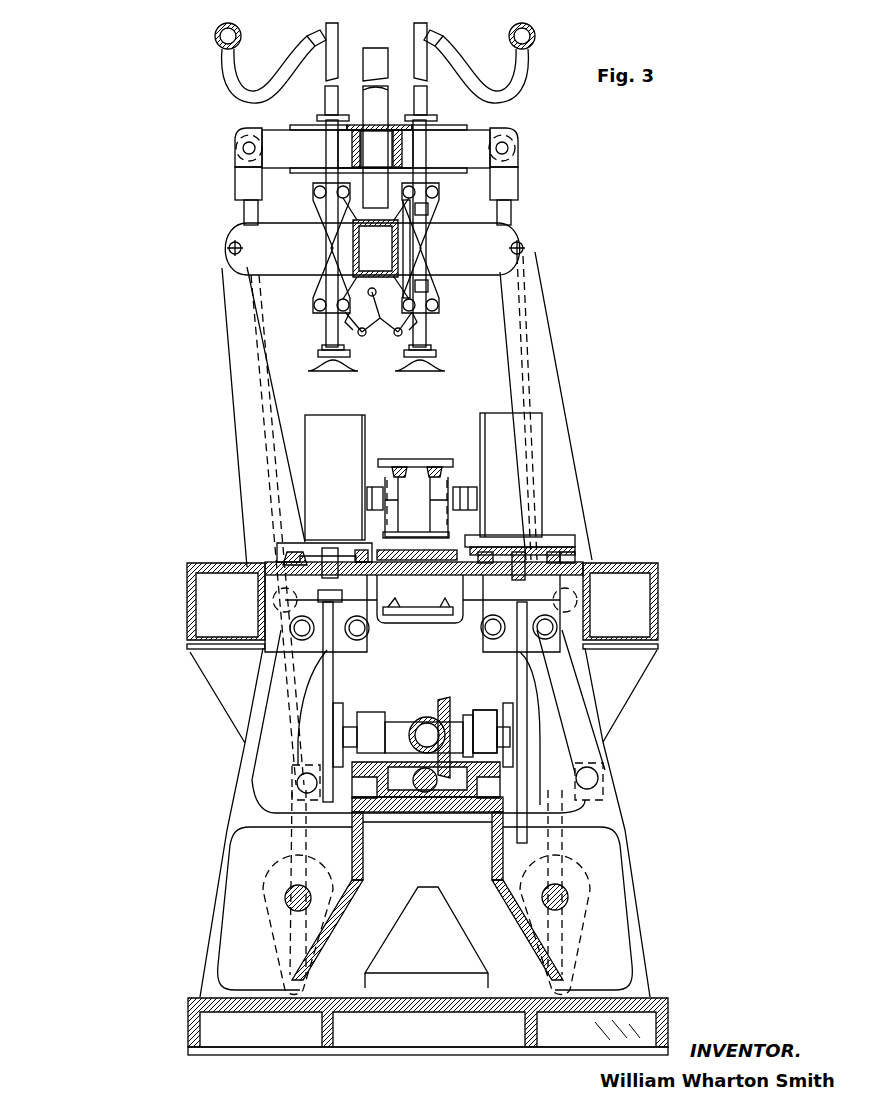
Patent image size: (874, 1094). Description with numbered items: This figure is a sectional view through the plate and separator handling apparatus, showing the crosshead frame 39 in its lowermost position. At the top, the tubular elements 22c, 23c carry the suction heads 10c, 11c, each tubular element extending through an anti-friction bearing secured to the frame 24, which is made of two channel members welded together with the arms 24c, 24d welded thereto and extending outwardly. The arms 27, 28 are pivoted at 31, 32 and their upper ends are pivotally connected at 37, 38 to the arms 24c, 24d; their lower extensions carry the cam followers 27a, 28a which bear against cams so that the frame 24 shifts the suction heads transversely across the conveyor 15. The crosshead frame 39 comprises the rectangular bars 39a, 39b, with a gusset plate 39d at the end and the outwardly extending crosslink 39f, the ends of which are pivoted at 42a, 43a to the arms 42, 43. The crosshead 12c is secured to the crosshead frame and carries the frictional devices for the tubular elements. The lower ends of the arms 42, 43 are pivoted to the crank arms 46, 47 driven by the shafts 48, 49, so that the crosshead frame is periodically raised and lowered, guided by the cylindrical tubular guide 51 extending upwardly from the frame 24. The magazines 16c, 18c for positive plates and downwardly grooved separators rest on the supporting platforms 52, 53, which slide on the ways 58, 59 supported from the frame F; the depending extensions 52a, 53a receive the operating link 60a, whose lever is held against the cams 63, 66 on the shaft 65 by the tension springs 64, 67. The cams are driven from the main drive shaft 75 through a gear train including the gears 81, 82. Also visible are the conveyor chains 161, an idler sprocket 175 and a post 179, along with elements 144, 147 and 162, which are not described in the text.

The hook 144 is at (214, 41).
The hook 147 is at (537, 35).
The tubular element 22c is at (327, 106).
The tubular element 23c is at (428, 104).
The cylindrical tubular guide 51 is at (377, 52).
The main crosshead frame 39 is at (358, 137).
The rectangular bar 39a is at (404, 158).
The rectangular bar 39b is at (350, 158).
The gusset plate 39d is at (292, 127).
The crosslink 39f is at (468, 136).
The crosshead 12c is at (344, 137).
The pivot 43a is at (246, 150).
The pivot 42a is at (508, 149).
The arm 43 is at (246, 206).
The arm 42 is at (514, 206).
The pivotal connection 38 is at (230, 249).
The pivotal connection 37 is at (523, 248).
The arm 28 is at (232, 400).
The arm 27 is at (560, 401).
The frame 24 is at (376, 248).
The arm 24c is at (475, 272).
The arm 24d is at (283, 274).
The suction head 11c is at (335, 371).
The suction head 10c is at (424, 371).
The magazine 16c is at (352, 420).
The magazine 18c is at (498, 418).
The conveyor 15 is at (398, 482).
The plate 162 is at (422, 460).
The conveyor chain 161 is at (384, 470).
The post 179 is at (404, 488).
The idler sprocket 175 is at (415, 503).
The supporting platform 53 is at (282, 530).
The extension 53a is at (330, 550).
The supporting platform 52 is at (546, 537).
The extension 52a is at (516, 556).
The way 58 is at (285, 557).
The way 59 is at (566, 557).
The pivot 32 is at (272, 600).
The pivot 31 is at (578, 600).
The operating link 60a is at (352, 601).
The tension spring 67 is at (290, 630).
The tension spring 64 is at (558, 630).
The cam 66 is at (334, 694).
The cam 63 is at (518, 670).
The shaft 65 is at (500, 730).
The gear 81 is at (418, 726).
The gear 82 is at (443, 712).
The main drive shaft 75 is at (438, 784).
The cam follower 28a is at (305, 779).
The cam follower 27a is at (600, 775).
The shaft 49 is at (279, 917).
The shaft 48 is at (564, 917).
The crank arm 47 is at (280, 927).
The crank arm 46 is at (560, 927).
The frame F is at (190, 652).